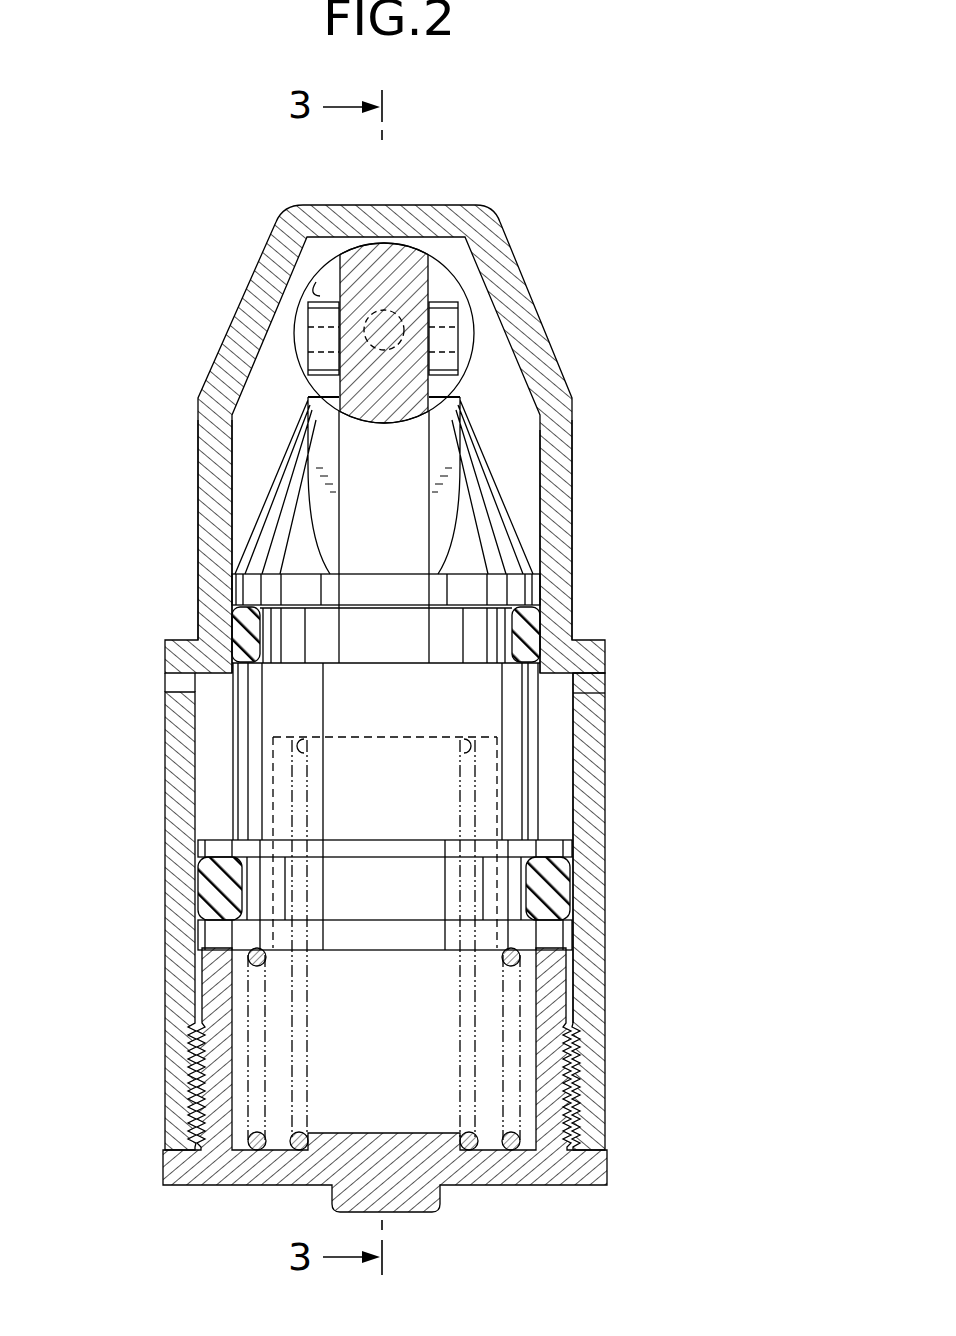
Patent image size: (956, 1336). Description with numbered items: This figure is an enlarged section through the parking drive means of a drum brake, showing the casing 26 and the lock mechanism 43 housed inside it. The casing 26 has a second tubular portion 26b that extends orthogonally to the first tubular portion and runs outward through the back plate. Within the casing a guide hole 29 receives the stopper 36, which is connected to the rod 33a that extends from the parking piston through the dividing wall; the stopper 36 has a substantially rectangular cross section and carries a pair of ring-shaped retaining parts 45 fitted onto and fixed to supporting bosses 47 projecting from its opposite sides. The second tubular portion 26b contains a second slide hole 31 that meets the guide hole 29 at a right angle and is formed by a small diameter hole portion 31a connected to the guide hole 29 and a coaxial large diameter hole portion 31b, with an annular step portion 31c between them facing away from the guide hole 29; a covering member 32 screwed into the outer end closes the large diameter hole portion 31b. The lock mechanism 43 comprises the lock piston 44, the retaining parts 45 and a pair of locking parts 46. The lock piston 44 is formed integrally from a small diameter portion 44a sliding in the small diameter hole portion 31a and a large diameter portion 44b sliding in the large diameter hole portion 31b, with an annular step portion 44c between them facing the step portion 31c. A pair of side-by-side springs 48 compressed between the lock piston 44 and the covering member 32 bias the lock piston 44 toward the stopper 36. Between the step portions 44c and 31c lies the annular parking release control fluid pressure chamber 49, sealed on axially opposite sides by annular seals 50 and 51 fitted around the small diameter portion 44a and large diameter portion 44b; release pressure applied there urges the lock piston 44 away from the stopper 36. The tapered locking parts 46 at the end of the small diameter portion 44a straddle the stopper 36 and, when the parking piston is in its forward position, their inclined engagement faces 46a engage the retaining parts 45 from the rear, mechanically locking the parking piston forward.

The casing 26 is at (198, 410).
The second tubular portion 26b is at (210, 520).
The guide hole 29 is at (314, 286).
The second slide hole 31 is at (205, 790).
The small diameter hole portion 31a is at (540, 507).
The large diameter hole portion 31b is at (572, 824).
The annular step portion 31c is at (568, 676).
The covering member 32 is at (186, 1168).
The rod 33a is at (383, 318).
The stopper 36 is at (347, 268).
The lock mechanism 43 is at (460, 268).
The lock piston 44 is at (200, 936).
The small diameter portion 44a is at (265, 589).
The large diameter portion 44b is at (552, 945).
The annular step portion 44c is at (218, 842).
The retaining parts 45 is at (322, 308).
The locking parts 46 is at (292, 513).
The engagement faces 46a is at (323, 442).
The supporting bosses 47 is at (330, 360).
The springs 48 is at (293, 1134).
The parking release control fluid pressure chamber 49 is at (560, 743).
The annular seal 50 is at (546, 632).
The annular seal 51 is at (208, 890).